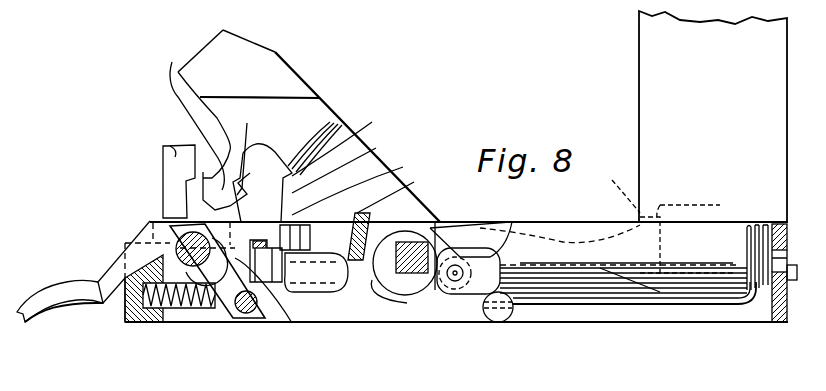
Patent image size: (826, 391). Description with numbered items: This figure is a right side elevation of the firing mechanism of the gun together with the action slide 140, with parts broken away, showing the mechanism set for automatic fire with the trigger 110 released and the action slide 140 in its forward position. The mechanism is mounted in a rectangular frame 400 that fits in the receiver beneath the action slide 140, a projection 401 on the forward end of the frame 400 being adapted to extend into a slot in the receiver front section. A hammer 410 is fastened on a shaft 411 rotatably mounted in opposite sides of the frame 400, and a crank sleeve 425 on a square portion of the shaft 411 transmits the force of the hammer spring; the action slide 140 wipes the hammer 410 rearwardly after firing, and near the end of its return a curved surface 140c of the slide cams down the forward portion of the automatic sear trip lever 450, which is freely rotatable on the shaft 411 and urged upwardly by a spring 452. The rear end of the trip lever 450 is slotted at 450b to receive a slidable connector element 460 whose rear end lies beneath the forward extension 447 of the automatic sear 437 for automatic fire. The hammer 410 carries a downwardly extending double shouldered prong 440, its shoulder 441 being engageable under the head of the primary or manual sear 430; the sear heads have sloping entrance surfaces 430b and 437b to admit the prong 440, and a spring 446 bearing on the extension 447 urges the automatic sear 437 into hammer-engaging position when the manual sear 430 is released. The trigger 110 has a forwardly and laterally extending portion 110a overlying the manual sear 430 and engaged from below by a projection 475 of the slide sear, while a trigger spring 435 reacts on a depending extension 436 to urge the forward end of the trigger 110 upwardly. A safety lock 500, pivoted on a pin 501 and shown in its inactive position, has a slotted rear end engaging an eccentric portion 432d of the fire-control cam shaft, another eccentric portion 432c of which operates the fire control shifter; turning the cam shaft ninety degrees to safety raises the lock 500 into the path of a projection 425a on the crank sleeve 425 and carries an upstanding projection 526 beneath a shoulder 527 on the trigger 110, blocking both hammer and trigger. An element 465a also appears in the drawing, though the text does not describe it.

The trigger 110 is at (80, 339).
The forwardly and laterally extending portion of the trigger 110a is at (455, 174).
The action slide 140 is at (644, 46).
The curved surface 140c is at (632, 181).
The frame 400 is at (718, 353).
The projection 401 is at (770, 210).
The hammer 410 is at (310, 46).
The hammer shaft 411 is at (518, 218).
The crank sleeve 425 is at (398, 300).
The projection on the hammer crank sleeve 425a is at (408, 371).
The primary or manual sear 430 is at (385, 116).
The sloping entrance surface of the manual sear 430b is at (283, 124).
The eccentric portion of the fire control cam shaft 432c is at (112, 244).
The eccentric portion of the fire-control cam shaft 432d is at (138, 200).
The trigger spring 435 is at (175, 318).
The depending extension of the trigger 436 is at (213, 313).
The automatic sear 437 is at (170, 146).
The sloping entrance surface of the automatic sear 437b is at (160, 95).
The double shouldered prong 440 is at (176, 64).
The shoulder 441 is at (237, 195).
The spring 446 is at (425, 158).
The forward extension of the automatic sear 447 is at (300, 335).
The automatic sear trip lever 450 is at (490, 238).
The slot 450b is at (383, 348).
The spring 452 is at (602, 307).
The connector element 460 is at (306, 312).
The pivot 465a is at (422, 213).
The projection 475 is at (458, 194).
The safety lock 500 is at (263, 313).
The pin 501 is at (255, 320).
The upstanding projection 526 is at (236, 348).
The shoulder 527 is at (415, 135).